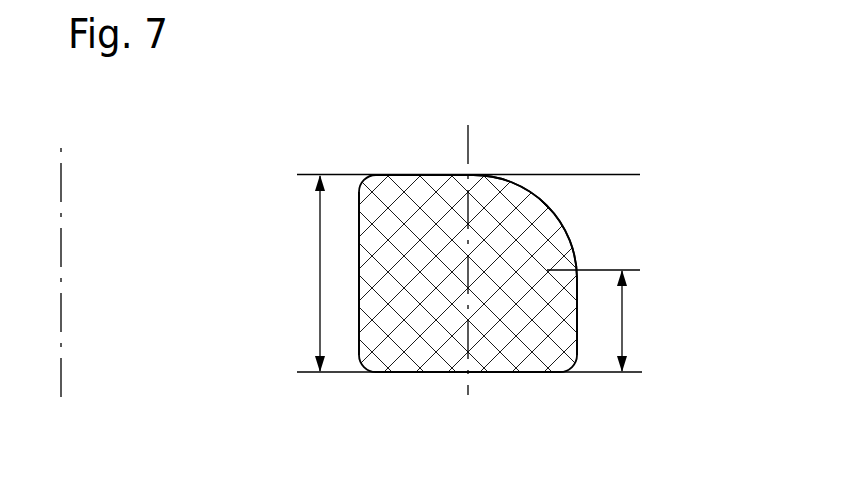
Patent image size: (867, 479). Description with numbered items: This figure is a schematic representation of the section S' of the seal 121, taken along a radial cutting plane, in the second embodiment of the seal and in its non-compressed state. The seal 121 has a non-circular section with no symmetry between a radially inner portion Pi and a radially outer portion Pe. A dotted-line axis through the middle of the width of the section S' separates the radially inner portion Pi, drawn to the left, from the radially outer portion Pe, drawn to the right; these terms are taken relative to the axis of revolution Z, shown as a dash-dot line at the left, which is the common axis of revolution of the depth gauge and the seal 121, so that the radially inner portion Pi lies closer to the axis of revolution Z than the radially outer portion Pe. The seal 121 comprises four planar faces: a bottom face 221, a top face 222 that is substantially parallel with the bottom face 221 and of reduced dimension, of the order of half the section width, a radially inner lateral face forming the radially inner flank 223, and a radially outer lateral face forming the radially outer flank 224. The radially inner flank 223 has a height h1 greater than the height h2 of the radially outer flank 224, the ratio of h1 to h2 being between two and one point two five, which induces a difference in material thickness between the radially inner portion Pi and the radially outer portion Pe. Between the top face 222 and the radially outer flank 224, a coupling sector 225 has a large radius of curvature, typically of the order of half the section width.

The seal 121 is at (538, 197).
The bottom face 221 is at (395, 372).
The top face 222 is at (427, 175).
The radially inner flank 223 is at (359, 242).
The radially outer flank 224 is at (577, 341).
The coupling sector 225 is at (555, 220).
The section S' is at (515, 118).
The radially inner portion Pi is at (387, 197).
The radially outer portion Pe is at (527, 245).
The height of the radially inner flank h1 is at (467, 274).
The height of the radially outer flank h2 is at (599, 320).
The axis of revolution Z is at (60, 258).